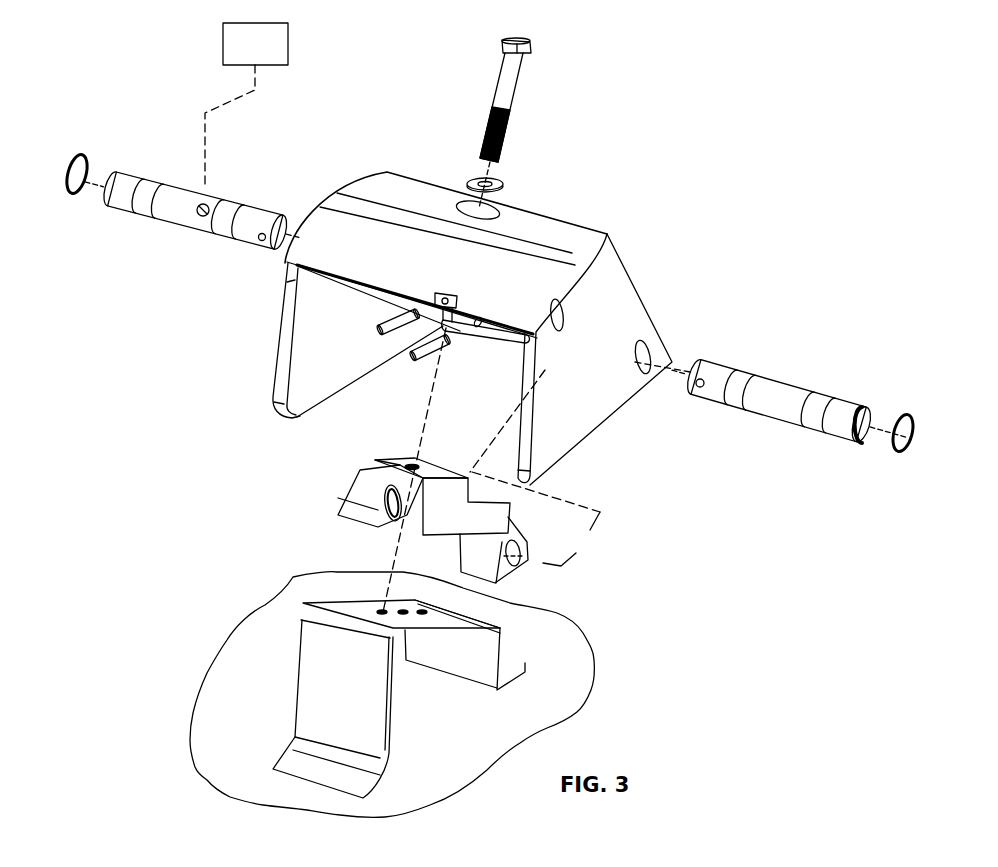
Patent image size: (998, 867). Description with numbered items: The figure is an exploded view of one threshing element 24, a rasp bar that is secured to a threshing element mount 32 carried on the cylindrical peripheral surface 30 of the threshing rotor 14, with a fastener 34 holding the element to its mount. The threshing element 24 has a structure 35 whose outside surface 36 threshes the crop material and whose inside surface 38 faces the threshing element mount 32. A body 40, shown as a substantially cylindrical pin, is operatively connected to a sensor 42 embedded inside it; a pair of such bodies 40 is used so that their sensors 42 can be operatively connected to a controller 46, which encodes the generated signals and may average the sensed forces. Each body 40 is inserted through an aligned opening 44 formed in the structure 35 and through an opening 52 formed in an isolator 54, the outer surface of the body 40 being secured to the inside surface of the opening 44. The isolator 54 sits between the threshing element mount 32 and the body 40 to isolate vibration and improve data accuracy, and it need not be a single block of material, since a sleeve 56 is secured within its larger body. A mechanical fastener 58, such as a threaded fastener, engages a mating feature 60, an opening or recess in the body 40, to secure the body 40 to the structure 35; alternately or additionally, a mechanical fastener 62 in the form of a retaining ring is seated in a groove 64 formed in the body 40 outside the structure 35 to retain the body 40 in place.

The threshing rotor 14 is at (289, 574).
The threshing element 24 is at (381, 172).
The cylindrical peripheral surface 30 is at (277, 610).
The threshing element mount 32 is at (500, 649).
The fastener 34 is at (533, 50).
The structure 35 is at (321, 204).
The outside surface 36 is at (569, 224).
The inside surface 38 is at (311, 350).
The body 40 is at (179, 182).
The sensor 42 is at (202, 216).
The opening 44 is at (560, 308).
The controller 46 is at (268, 59).
The opening 52 is at (390, 530).
The isolator 54 is at (401, 459).
The sleeve 56 is at (356, 470).
The mechanical fastener 58 is at (374, 325).
The mating feature 60 is at (703, 388).
The mechanical fastener 62 is at (79, 153).
The groove 64 is at (866, 412).